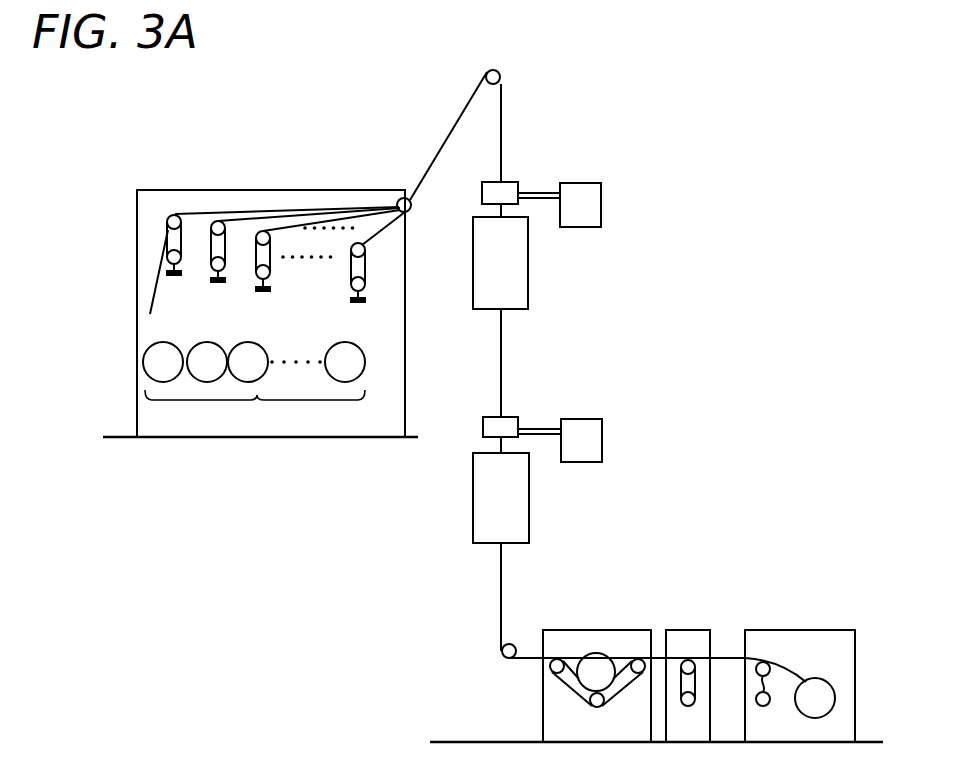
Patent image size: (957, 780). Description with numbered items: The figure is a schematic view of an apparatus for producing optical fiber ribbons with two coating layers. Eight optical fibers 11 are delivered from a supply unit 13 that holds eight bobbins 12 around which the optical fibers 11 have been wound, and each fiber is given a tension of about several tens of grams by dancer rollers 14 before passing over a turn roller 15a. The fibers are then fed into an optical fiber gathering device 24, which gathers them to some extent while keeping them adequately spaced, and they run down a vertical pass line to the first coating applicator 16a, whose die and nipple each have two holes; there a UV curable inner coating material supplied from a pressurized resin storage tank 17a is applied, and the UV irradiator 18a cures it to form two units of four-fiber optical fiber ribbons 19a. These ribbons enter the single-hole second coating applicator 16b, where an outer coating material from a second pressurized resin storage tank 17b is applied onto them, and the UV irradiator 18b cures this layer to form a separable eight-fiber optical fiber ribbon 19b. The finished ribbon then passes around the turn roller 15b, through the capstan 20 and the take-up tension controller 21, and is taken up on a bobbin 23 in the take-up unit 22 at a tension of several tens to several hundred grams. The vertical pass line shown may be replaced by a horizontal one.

The optical fiber 11 is at (150, 314).
The bobbin 12 is at (337, 370).
The supply unit 13 is at (263, 190).
The dancer roller 14 is at (168, 256).
The turn roller 15a is at (410, 199).
The turn roller 15b is at (503, 663).
The first coating applicator 16a is at (509, 181).
The second coating applicator 16b is at (513, 418).
The pressurized resin storage tank 17a is at (585, 183).
The pressurized resin storage tank 17b is at (587, 418).
The UV irradiator 18a is at (529, 240).
The UV irradiator 18b is at (530, 473).
The optical fiber ribbons 19a is at (503, 350).
The separable optical fiber ribbon 19b is at (498, 598).
The capstan 20 is at (572, 630).
The take-up tension controller 21 is at (690, 630).
The take-up unit 22 is at (775, 630).
The bobbin 23 is at (805, 717).
The optical fiber gathering device 24 is at (501, 76).